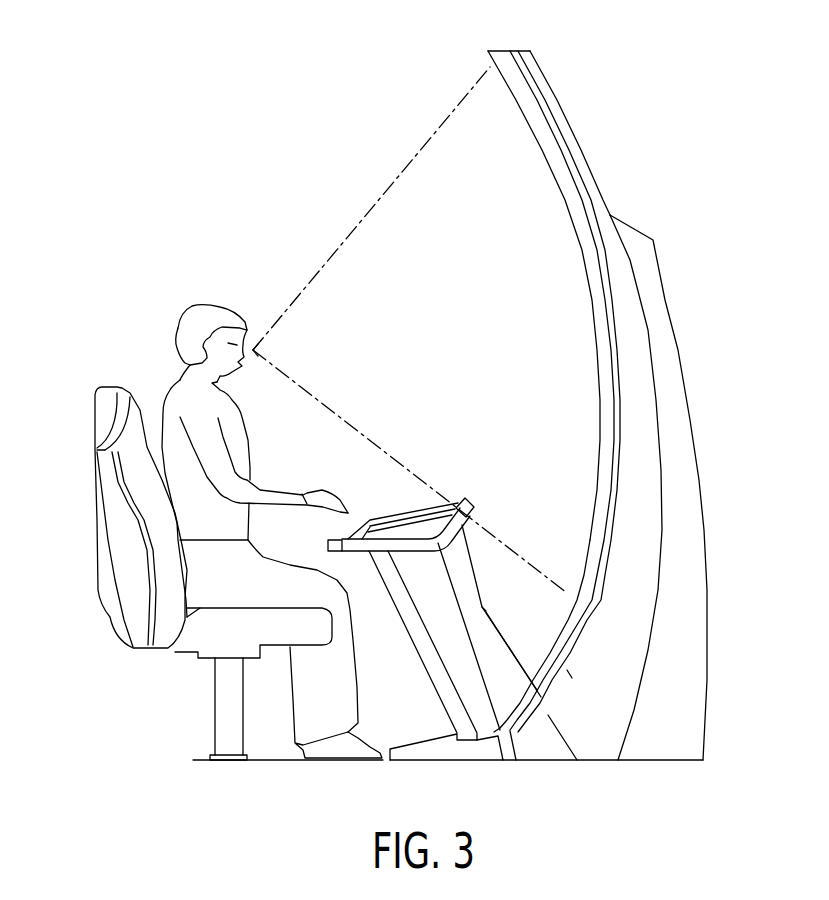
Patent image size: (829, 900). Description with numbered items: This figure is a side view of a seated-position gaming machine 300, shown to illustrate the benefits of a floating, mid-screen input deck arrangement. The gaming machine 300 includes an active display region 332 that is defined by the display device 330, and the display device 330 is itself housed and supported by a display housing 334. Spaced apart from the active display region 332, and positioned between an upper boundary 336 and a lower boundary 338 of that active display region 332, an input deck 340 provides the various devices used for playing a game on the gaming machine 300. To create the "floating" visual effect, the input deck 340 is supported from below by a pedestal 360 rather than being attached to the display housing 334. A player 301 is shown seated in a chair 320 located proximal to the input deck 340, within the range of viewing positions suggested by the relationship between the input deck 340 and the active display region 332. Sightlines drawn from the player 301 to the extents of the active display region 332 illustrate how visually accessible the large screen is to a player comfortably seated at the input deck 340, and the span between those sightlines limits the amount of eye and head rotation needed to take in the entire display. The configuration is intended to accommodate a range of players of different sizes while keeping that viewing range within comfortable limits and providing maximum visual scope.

The gaming machine 300 is at (662, 184).
The player 301 is at (163, 403).
The chair 320 is at (118, 620).
The display device 330 is at (500, 50).
The active display region 332 is at (535, 135).
The display housing 334 is at (668, 295).
The upper boundary 336 is at (490, 64).
The lower boundary 338 is at (575, 598).
The input deck 340 is at (470, 507).
The pedestal 360 is at (412, 641).